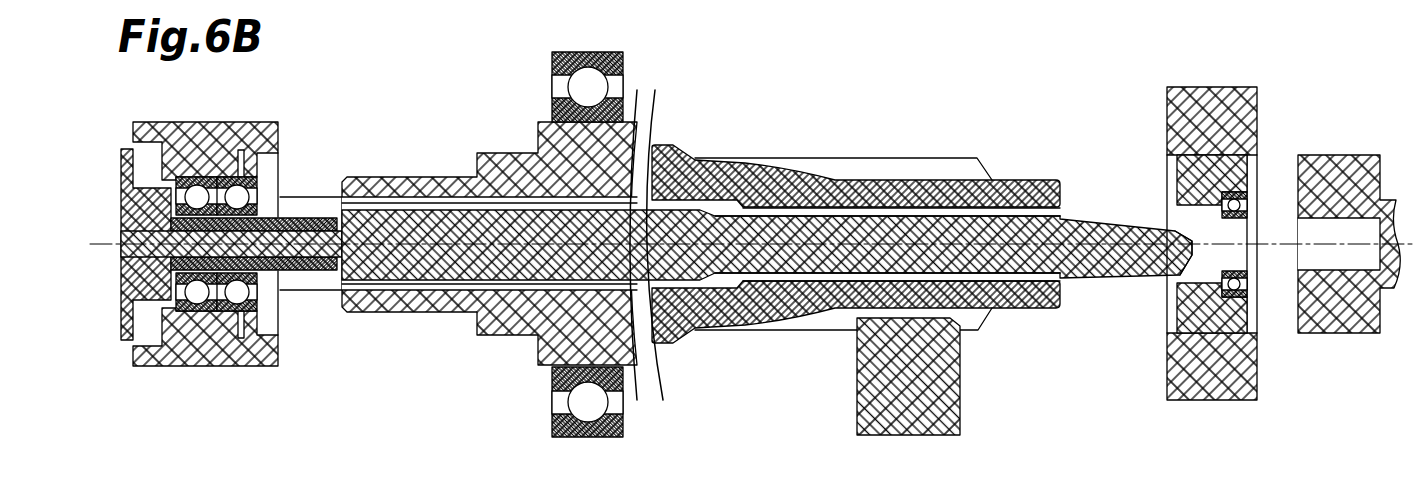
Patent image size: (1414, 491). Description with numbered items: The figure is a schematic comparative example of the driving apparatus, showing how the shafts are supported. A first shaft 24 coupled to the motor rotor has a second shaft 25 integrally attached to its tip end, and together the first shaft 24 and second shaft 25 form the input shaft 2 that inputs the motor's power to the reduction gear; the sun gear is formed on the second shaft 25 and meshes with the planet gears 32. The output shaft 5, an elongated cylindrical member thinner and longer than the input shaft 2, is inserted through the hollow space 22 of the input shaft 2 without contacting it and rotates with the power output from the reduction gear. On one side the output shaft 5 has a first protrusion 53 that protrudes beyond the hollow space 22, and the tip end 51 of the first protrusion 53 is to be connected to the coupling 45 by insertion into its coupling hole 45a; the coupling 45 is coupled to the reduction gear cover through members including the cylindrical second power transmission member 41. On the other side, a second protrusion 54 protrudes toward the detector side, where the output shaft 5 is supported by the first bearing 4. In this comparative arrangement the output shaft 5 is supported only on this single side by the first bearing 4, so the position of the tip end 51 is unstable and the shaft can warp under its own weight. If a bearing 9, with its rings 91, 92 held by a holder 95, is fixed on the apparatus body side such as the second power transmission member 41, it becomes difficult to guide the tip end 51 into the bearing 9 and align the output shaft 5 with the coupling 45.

The input shaft 2 is at (670, 261).
The first supporting member (first bearing) 4 is at (236, 293).
The output shaft 5 is at (913, 233).
The bearing 9 is at (1271, 219).
The hollow space 22 is at (808, 212).
The first shaft 24 is at (610, 333).
The second shaft 25 is at (733, 312).
The planet gears 32 is at (942, 410).
The second power transmission member 41 is at (1182, 378).
The coupling 45 is at (1349, 250).
The coupling hole 45a is at (1335, 232).
The tip end 51 is at (1177, 230).
The first protrusion 53 is at (1092, 227).
The second protrusion 54 is at (302, 236).
The inner ring 91 is at (1243, 290).
The outer ring 92 is at (1243, 273).
The bearing holder 95 is at (1192, 313).